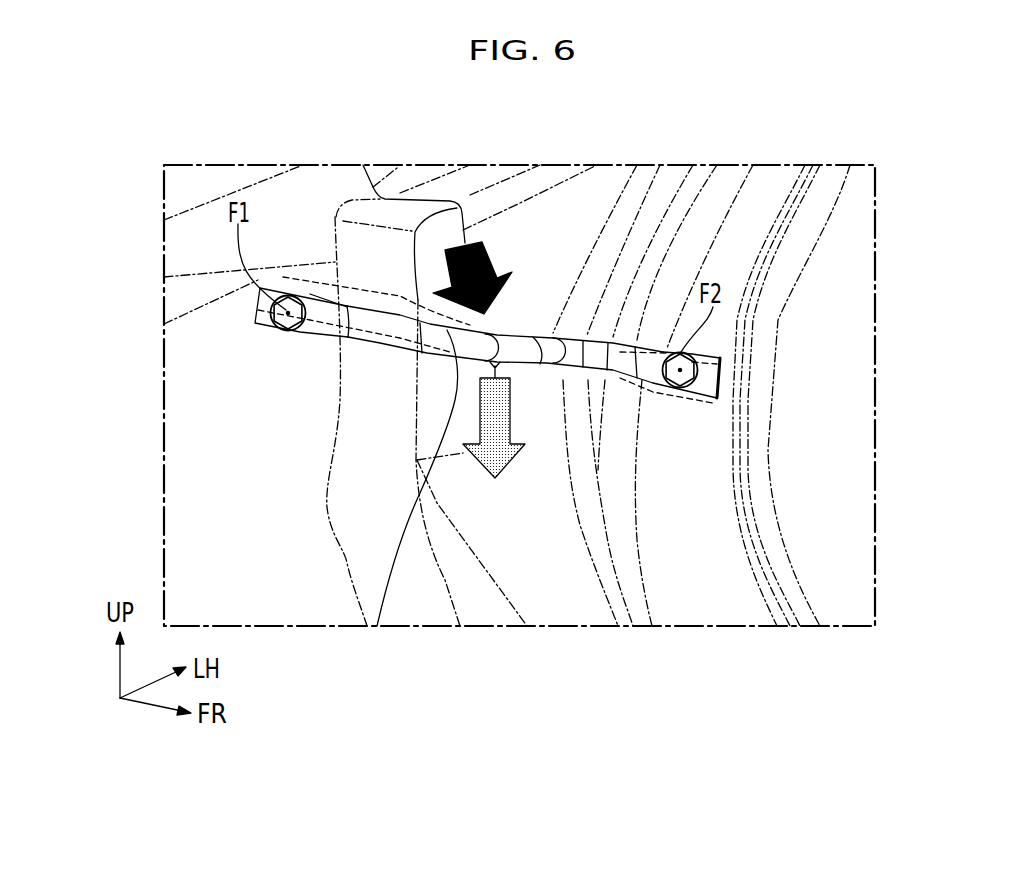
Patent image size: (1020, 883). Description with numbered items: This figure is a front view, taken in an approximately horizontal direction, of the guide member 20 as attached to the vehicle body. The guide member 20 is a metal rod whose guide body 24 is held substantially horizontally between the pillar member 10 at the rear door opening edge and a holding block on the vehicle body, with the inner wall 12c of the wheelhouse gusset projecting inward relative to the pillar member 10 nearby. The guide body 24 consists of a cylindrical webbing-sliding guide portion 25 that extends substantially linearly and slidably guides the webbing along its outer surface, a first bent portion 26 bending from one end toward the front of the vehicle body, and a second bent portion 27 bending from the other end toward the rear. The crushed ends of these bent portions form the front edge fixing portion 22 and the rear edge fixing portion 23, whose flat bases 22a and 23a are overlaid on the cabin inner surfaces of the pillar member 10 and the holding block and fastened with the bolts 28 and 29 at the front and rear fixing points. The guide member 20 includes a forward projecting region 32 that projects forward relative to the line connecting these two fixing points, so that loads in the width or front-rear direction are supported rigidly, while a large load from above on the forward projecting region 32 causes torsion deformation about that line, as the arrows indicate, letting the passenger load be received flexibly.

The pillar member 10 is at (722, 327).
The inner wall 12c is at (281, 347).
The guide member 20 is at (537, 322).
The front edge fixing portion 22 is at (731, 414).
The base 22a is at (708, 380).
The rear edge fixing portion 23 is at (343, 383).
The base 23a is at (312, 343).
The guide body 24 is at (529, 378).
The webbing-sliding guide portion 25 is at (510, 337).
The first bent portion 26 is at (598, 380).
The second bent portion 27 is at (387, 327).
The bolt 28 is at (708, 348).
The bolt 29 is at (305, 283).
The forward projecting region 32 is at (377, 626).